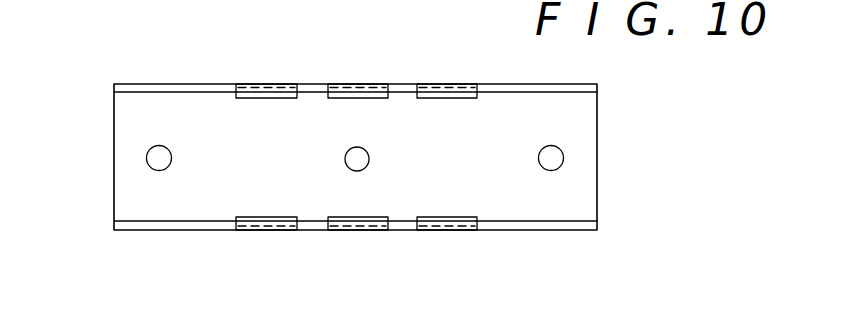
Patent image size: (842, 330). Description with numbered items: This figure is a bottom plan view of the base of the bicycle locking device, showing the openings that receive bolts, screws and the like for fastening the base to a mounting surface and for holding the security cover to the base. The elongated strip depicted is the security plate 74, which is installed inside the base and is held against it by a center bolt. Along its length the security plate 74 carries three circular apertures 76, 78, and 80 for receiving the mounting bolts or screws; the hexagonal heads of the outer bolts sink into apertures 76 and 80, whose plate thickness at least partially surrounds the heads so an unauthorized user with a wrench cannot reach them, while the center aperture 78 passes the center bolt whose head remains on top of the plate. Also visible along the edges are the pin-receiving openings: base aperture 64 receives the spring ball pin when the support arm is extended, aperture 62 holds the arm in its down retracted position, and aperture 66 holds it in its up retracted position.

The aperture 62 is at (452, 84).
The base aperture 64 is at (360, 84).
The aperture 66 is at (244, 84).
The security plate 74 is at (577, 111).
The circular aperture 76 is at (556, 160).
The circular aperture 78 is at (366, 160).
The circular aperture 80 is at (153, 160).